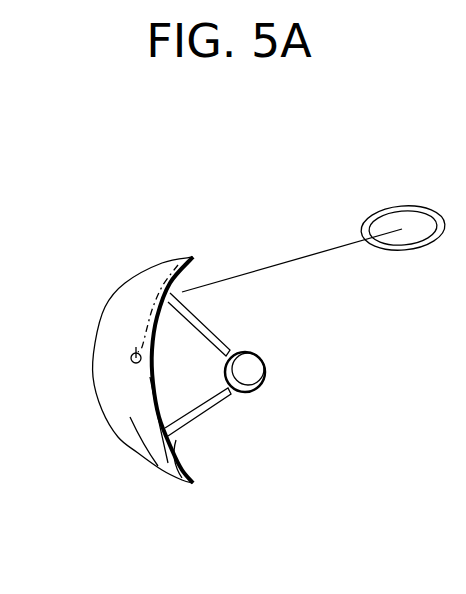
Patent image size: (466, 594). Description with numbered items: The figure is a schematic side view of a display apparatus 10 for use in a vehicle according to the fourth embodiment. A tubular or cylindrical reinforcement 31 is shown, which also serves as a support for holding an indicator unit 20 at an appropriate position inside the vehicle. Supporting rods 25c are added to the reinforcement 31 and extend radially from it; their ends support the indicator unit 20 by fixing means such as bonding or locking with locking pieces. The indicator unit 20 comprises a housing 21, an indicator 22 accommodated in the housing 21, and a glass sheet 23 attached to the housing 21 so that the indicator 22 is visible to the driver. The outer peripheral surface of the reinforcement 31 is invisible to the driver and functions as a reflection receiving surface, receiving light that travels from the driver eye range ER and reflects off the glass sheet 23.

The display apparatus 10 is at (284, 152).
The indicator unit 20 is at (161, 261).
The housing 21 is at (118, 297).
The indicator 22 is at (146, 300).
The face glass sheet 23 is at (178, 468).
The supporting rods 25c is at (182, 315).
The reinforcement 31 is at (243, 348).
The driver eye range ER is at (407, 218).